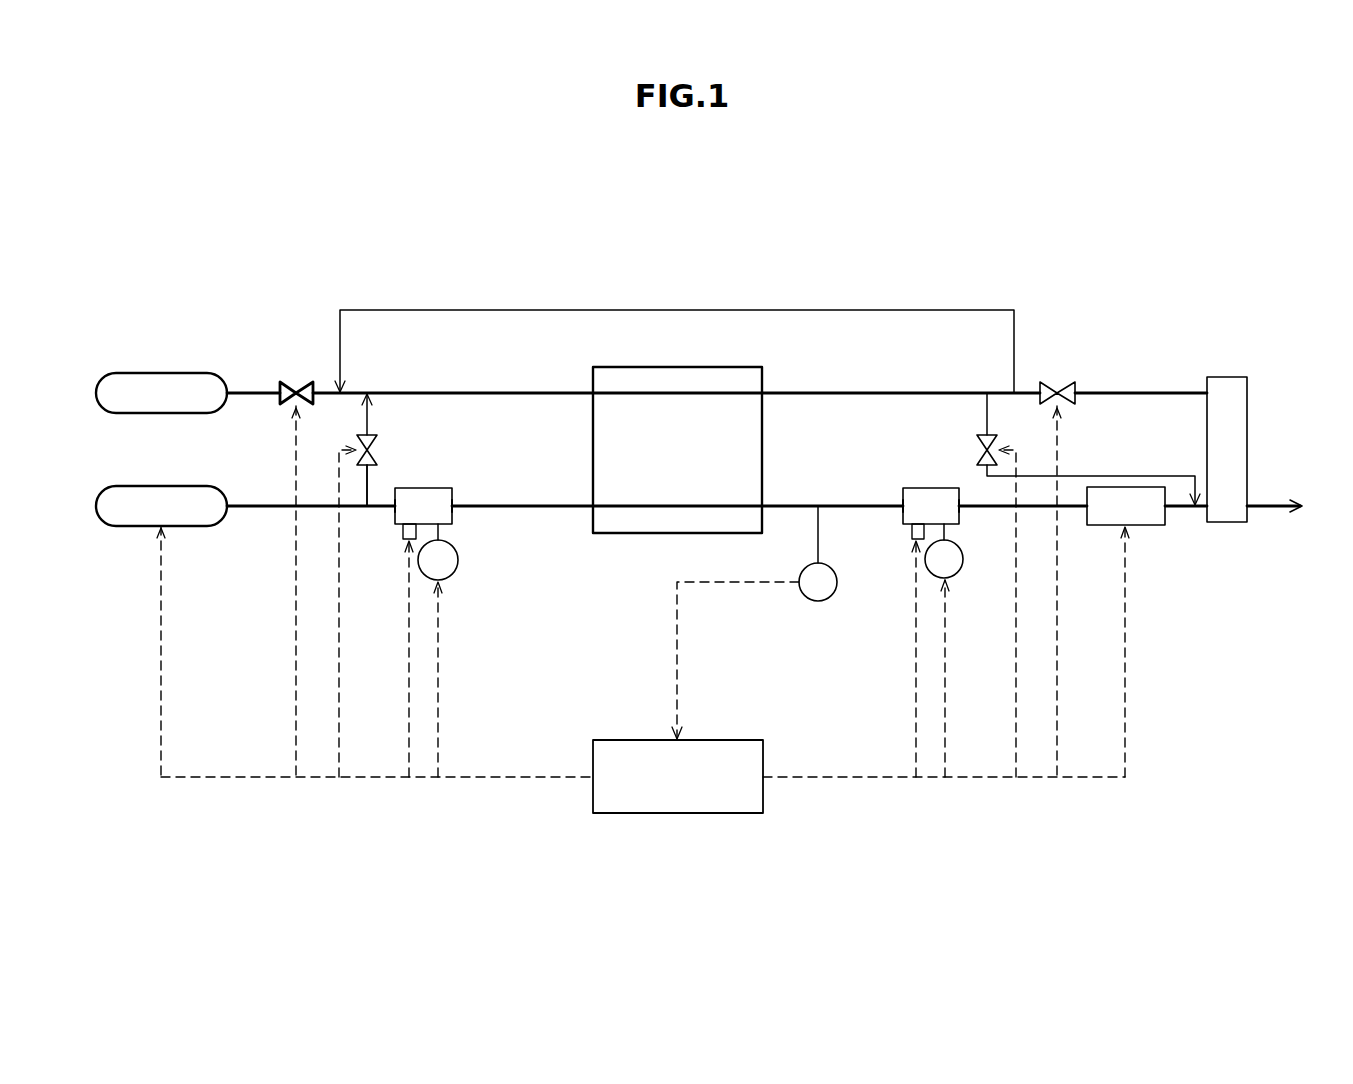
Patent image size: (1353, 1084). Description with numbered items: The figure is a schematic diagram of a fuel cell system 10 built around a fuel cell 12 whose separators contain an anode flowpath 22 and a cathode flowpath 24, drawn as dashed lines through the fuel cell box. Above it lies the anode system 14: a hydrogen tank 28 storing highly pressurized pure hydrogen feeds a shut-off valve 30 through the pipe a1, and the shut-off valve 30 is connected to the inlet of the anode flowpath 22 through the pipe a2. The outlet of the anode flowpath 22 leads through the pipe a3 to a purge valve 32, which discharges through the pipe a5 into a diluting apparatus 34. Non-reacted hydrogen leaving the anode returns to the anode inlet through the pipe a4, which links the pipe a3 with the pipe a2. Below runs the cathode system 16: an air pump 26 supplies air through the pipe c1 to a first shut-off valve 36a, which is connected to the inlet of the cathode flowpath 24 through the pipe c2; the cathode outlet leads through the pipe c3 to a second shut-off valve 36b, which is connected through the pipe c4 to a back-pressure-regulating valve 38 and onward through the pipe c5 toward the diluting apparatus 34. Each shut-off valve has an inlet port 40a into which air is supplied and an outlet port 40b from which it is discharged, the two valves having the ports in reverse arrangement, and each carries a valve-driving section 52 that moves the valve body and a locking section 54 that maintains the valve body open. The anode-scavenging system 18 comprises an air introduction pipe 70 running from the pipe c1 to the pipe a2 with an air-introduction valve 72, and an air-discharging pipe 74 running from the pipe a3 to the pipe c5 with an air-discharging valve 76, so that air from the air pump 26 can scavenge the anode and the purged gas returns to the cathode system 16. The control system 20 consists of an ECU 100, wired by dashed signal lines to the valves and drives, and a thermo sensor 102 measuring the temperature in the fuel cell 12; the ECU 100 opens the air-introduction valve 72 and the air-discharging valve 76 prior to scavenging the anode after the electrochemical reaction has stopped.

The fuel cell system 10 is at (868, 195).
The fuel cell 12 is at (654, 364).
The anode system 14 is at (279, 328).
The cathode system 16 is at (263, 590).
The anode-scavenging system 18 is at (368, 528).
The control system 20 is at (534, 865).
The anode flowpath 22 is at (666, 397).
The cathode flowpath 24 is at (689, 502).
The air pump 26 is at (161, 631).
The hydrogen tank 28 is at (161, 393).
The shut-off valve 30 is at (298, 385).
The purge valve 32 is at (1061, 385).
The diluting apparatus 34 is at (1227, 449).
The first shut-off valve 36a is at (442, 488).
The second shut-off valve 36b is at (926, 488).
The back-pressure-regulating valve 38 is at (1126, 632).
The inlet port 40a is at (395, 506).
The outlet port 40b is at (452, 506).
The valve-driving section 52 is at (458, 560).
The locking section 54 is at (400, 540).
The air introduction pipe 70 is at (351, 410).
The air-introduction valve 72 is at (366, 432).
The air-discharging pipe 74 is at (964, 400).
The air-discharging valve 76 is at (988, 432).
The ECU 100 is at (643, 776).
The thermo sensor 102 is at (800, 598).
The pipe a1 is at (254, 391).
The pipe a2 is at (426, 391).
The pipe a3 is at (920, 391).
The pipe a4 is at (930, 309).
The pipe a5 is at (1142, 391).
The pipe c1 is at (258, 508).
The pipe c2 is at (566, 504).
The pipe c3 is at (778, 508).
The pipe c4 is at (1072, 508).
The pipe c5 is at (1178, 508).